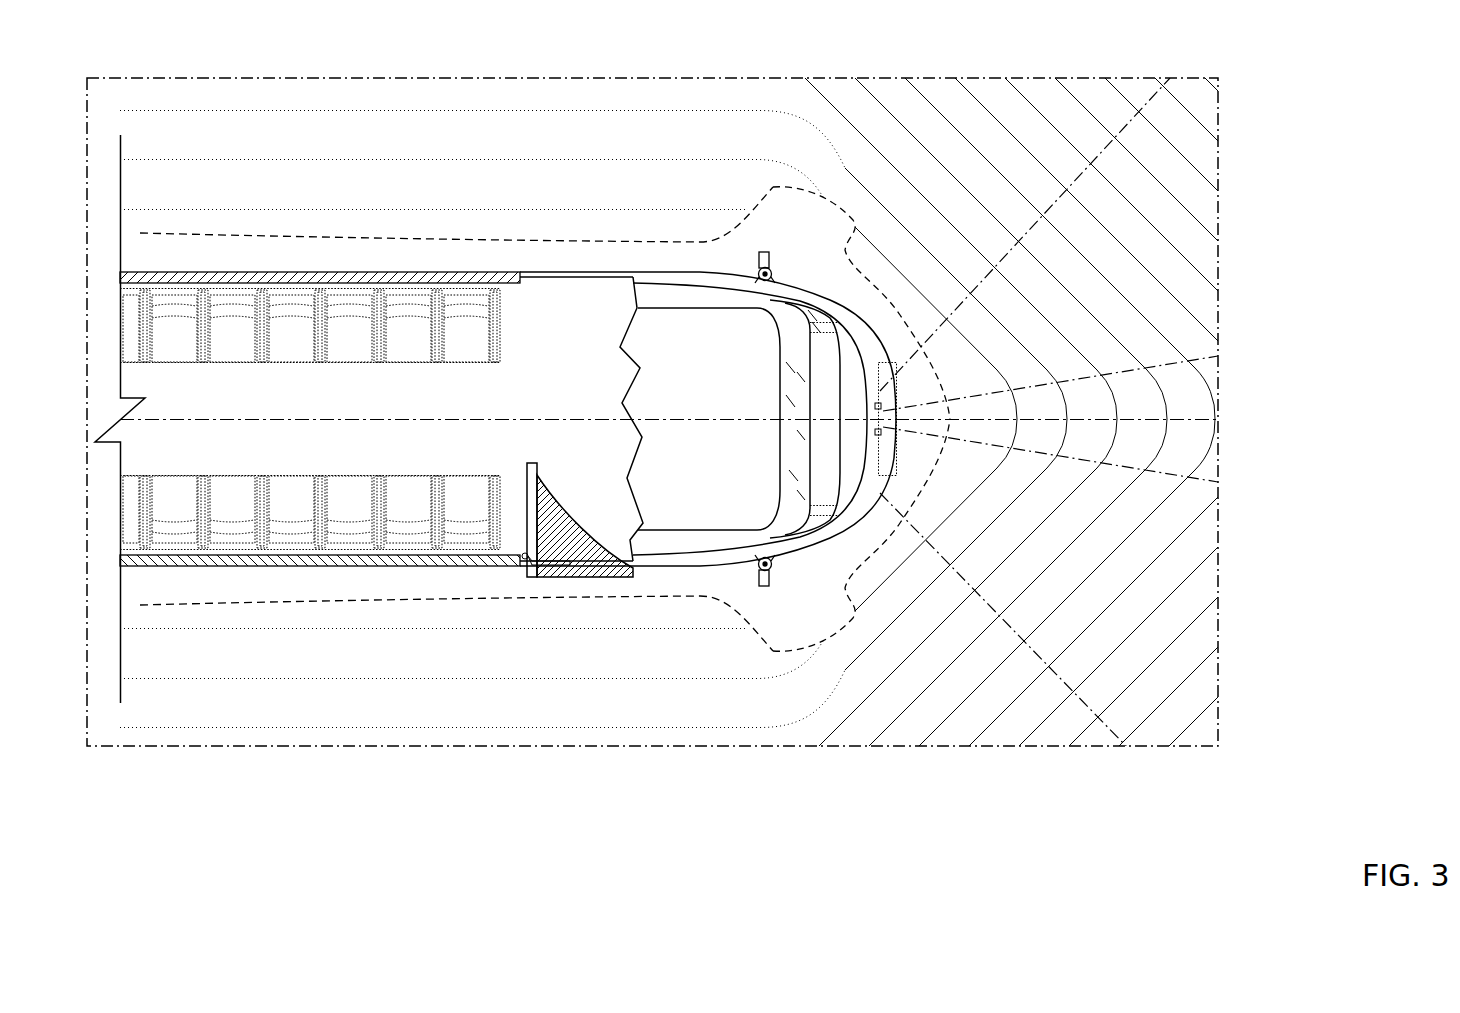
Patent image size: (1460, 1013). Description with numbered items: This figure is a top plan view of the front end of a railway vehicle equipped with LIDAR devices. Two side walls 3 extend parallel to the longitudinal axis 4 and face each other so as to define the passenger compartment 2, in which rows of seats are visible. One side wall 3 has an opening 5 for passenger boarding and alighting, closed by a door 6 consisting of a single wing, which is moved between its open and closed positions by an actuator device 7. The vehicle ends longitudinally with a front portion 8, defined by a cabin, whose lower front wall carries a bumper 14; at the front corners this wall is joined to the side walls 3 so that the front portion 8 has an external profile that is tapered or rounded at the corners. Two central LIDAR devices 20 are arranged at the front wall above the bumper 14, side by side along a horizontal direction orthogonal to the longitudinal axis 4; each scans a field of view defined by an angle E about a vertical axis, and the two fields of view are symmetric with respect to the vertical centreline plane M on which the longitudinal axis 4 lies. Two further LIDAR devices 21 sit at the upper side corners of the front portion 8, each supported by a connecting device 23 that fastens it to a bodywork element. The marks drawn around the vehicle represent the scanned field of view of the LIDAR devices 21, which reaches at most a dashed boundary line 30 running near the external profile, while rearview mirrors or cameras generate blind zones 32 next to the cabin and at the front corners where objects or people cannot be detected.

The passenger compartment 2 is at (512, 353).
The side walls 3 is at (487, 272).
The longitudinal axis 4 is at (193, 423).
The vertical centreline plane M is at (482, 419).
The openings 5 is at (535, 580).
The doors 6 is at (527, 468).
The actuator device 7 is at (548, 560).
The front portion 8 is at (807, 289).
The bumper 14 is at (897, 525).
The central LIDAR devices 20 is at (880, 407).
The LIDAR devices 21 is at (773, 262).
The connecting device 23 is at (741, 272).
The boundary line 30 is at (700, 612).
The blind zones 32 is at (785, 207).
The field of view angle E is at (920, 388).